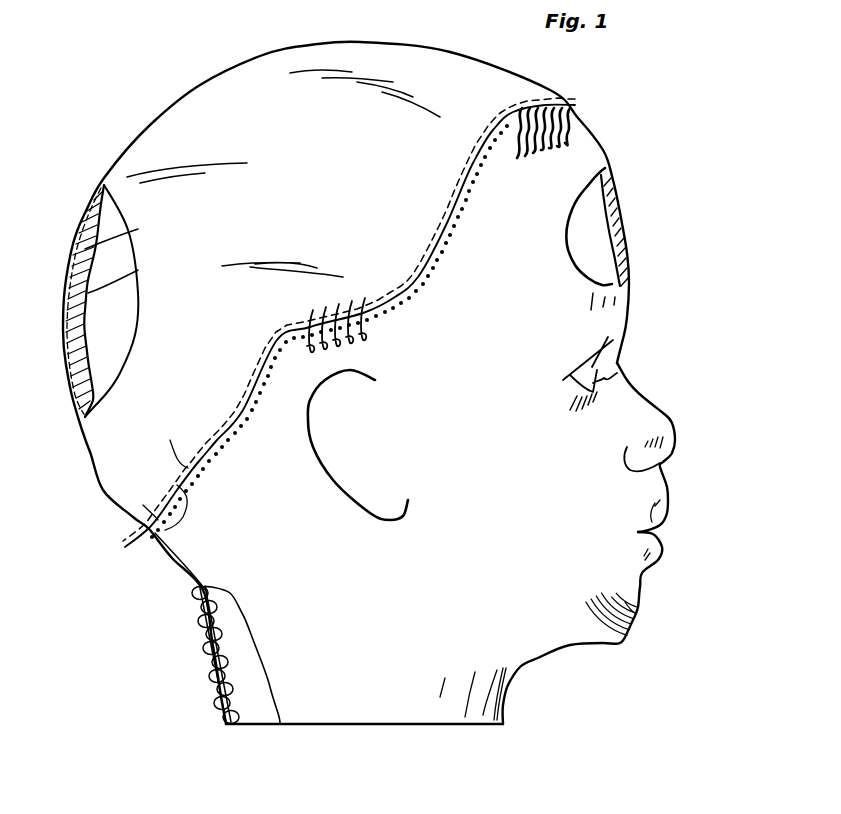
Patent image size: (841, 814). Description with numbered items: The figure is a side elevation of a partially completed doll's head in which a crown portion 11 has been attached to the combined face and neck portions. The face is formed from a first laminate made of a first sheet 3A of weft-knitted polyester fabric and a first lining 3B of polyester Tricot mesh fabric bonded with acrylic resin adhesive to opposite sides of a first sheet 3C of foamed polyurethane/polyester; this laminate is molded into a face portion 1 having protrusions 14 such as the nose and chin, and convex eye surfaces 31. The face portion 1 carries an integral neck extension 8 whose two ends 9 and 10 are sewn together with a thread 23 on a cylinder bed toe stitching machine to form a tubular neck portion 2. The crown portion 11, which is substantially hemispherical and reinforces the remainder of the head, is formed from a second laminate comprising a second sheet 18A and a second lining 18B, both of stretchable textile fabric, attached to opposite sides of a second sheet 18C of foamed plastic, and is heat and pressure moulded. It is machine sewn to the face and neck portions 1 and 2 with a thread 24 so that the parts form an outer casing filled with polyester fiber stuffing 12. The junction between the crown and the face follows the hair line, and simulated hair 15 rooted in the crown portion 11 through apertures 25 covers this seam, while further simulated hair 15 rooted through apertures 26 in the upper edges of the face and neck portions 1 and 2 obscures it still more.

The face portion 1 is at (522, 513).
The neck portion 2 is at (465, 685).
The first sheet of weft-knitted polyester fabric 3A is at (610, 184).
The first lining of polyester Tricot mesh fabric 3B is at (590, 248).
The first sheet of foamed polyurethane/polyester 3C is at (617, 206).
The integral neck extension 8 is at (358, 609).
The end of neck extension 9 is at (235, 714).
The end of neck extension 10 is at (220, 674).
The crown portion 11 is at (282, 172).
The polyester fiber stuffing 12 is at (105, 333).
The protrusions 14 is at (656, 434).
The simulated hair 15 is at (562, 140).
The second sheet of stretchable textile fabric 18A is at (80, 223).
The second lining of stretchable textile fabric 18B is at (138, 270).
The second sheet of foamed plastic 18C is at (138, 229).
The thread 23 is at (203, 589).
The thread 24 is at (180, 438).
The apertures 25 is at (304, 332).
The apertures 26 is at (150, 530).
The convex eye surfaces 31 is at (617, 363).